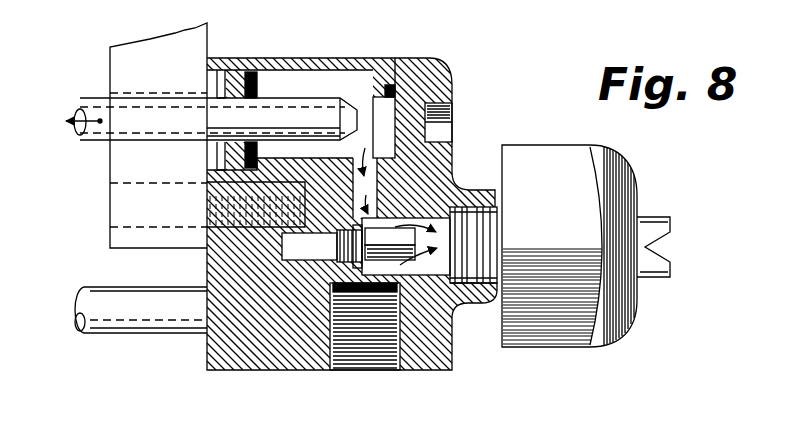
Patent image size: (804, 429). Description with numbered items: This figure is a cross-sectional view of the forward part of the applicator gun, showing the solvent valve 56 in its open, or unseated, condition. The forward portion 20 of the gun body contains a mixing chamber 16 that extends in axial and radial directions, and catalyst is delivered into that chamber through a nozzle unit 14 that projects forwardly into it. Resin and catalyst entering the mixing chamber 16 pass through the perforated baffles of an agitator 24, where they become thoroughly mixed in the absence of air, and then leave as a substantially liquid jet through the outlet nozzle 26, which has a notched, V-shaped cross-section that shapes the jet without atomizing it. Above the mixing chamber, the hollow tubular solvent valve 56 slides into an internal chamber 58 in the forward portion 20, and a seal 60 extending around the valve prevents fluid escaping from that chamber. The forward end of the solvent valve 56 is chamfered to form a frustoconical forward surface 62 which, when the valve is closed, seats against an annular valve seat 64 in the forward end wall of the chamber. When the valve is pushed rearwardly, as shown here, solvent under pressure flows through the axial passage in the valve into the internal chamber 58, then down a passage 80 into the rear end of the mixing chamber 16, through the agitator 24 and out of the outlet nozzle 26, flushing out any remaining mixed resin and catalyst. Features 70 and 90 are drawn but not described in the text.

The nozzle unit 14 is at (406, 246).
The mixing chamber 16 is at (447, 306).
The forward portion 20 is at (401, 376).
The agitator 24 is at (479, 245).
The outlet nozzle 26 is at (650, 218).
The solvent valve 56 is at (352, 102).
The internal chamber 58 is at (263, 90).
The seal 60 is at (247, 70).
The frustoconical forward surface 62 is at (437, 40).
The annular valve seat 64 is at (433, 60).
The port 70 is at (455, 90).
The downward passage 80 is at (364, 183).
The plug 90 is at (322, 246).